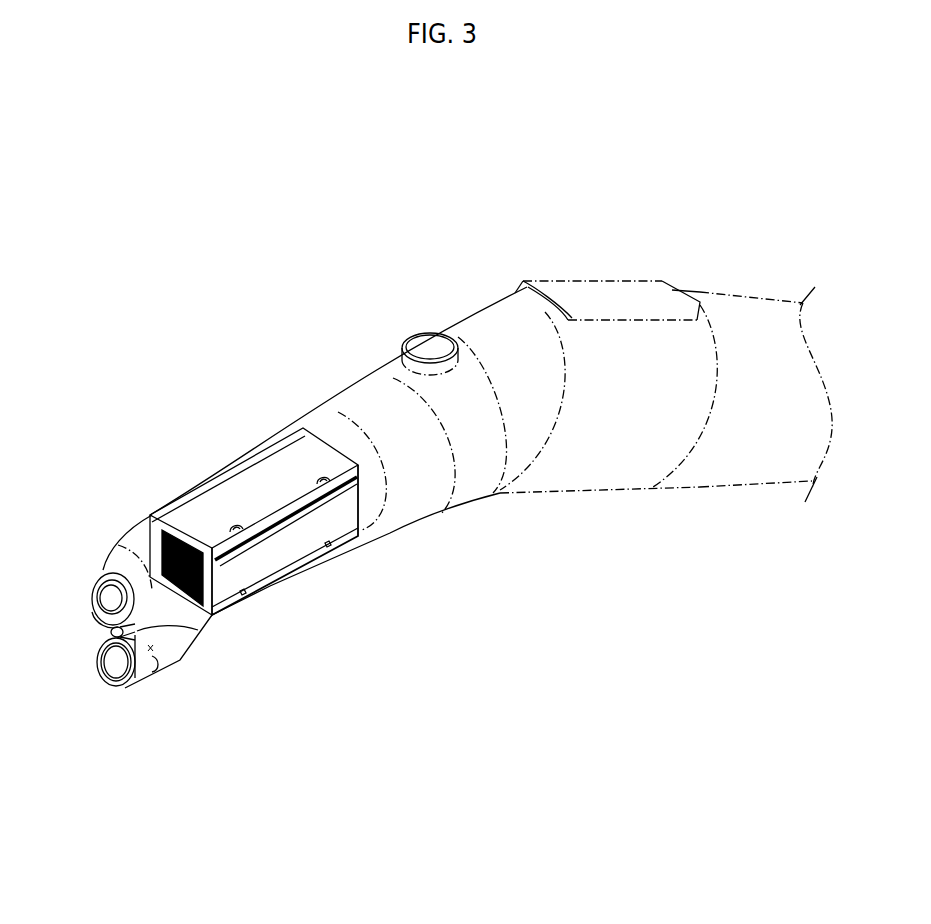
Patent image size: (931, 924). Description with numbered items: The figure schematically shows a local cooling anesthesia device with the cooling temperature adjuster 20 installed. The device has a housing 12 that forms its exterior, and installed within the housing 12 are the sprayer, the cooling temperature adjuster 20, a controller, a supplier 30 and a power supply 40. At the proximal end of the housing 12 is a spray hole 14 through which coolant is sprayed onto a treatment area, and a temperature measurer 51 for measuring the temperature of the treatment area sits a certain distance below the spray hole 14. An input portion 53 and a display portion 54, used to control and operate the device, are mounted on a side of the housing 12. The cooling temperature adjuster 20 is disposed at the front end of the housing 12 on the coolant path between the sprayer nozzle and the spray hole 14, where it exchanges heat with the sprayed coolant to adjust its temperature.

The housing 12 is at (332, 391).
The spray hole 14 is at (112, 562).
The cooling temperature adjuster 20 is at (226, 484).
The supplier 30 is at (575, 490).
The power supply 40 is at (733, 490).
The temperature measurer 51 is at (114, 690).
The input portion 53 is at (415, 331).
The display portion 54 is at (581, 279).